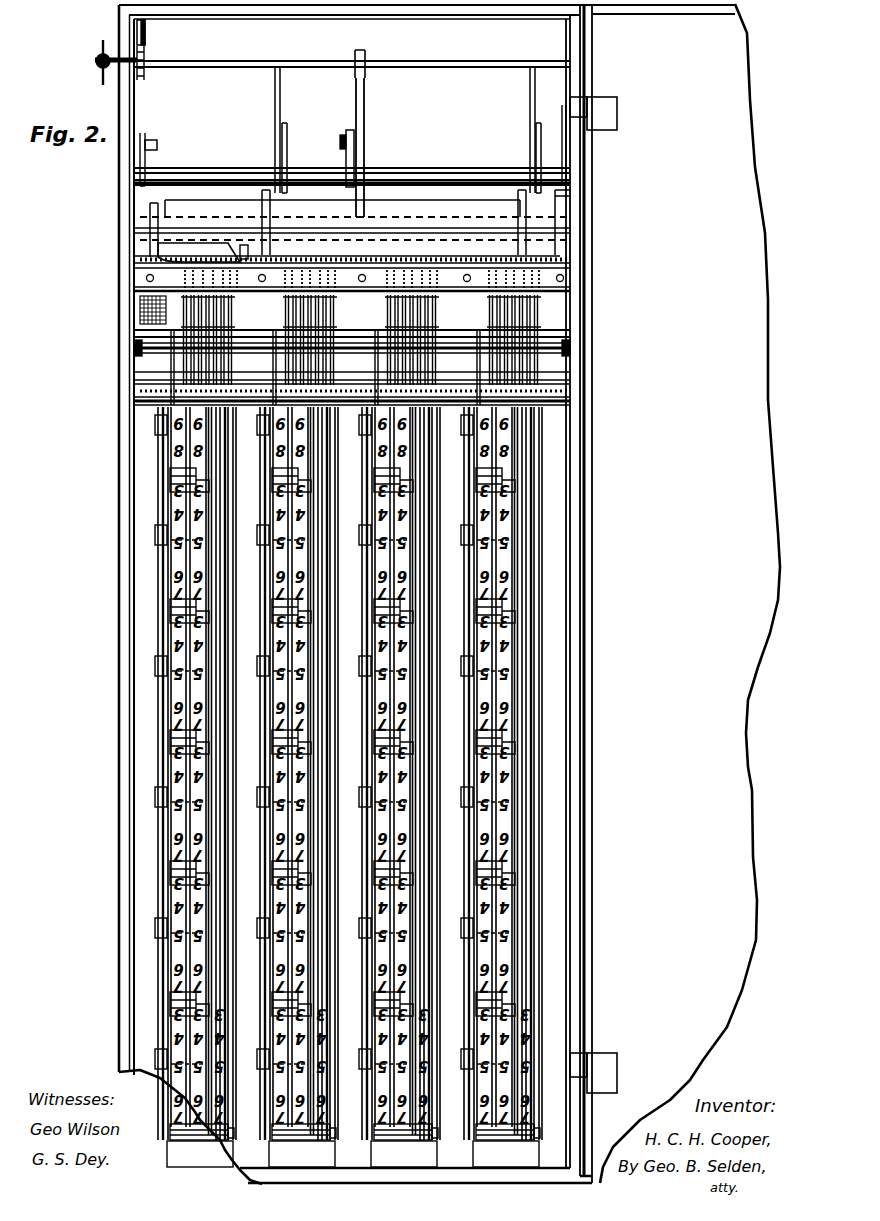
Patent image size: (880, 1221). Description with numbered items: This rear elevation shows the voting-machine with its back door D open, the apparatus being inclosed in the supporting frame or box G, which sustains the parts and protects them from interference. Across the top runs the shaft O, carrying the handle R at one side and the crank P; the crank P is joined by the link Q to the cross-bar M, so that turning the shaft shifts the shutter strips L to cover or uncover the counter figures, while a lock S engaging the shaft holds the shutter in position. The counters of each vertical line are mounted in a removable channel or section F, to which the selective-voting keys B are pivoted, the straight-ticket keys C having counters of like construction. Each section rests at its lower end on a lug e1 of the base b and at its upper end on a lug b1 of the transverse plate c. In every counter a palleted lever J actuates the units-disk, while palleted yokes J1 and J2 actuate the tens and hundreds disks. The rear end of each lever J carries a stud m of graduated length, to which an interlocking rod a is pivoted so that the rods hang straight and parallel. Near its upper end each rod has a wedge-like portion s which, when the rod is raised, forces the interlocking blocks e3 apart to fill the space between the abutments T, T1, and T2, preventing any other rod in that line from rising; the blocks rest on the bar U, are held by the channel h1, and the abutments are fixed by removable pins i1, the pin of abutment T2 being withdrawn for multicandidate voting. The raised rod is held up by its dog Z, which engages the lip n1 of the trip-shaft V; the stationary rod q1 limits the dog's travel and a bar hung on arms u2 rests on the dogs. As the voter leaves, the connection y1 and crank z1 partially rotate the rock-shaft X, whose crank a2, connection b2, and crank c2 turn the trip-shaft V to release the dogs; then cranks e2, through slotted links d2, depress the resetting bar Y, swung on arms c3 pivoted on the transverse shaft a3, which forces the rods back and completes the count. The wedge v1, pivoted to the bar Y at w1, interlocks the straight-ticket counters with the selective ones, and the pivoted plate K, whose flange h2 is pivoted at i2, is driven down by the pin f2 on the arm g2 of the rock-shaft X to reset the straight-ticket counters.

The supporting frame or box G is at (575, 40).
The door D is at (650, 550).
The shaft O is at (452, 61).
The lock S is at (145, 36).
The handle R is at (100, 62).
The arm g2 is at (145, 133).
The pin f2 is at (157, 145).
The slotted links d2 is at (280, 98).
The cranks e2 is at (287, 141).
The crank P is at (355, 76).
The connection or link Q is at (367, 147).
The connection y1 is at (346, 135).
The crank z1 is at (346, 157).
The rock-shaft X is at (470, 168).
The crank a2 is at (566, 152).
The connection b2 is at (565, 200).
The flange h2 is at (150, 210).
The pivoted plate K is at (170, 250).
The pivot i2 is at (150, 232).
The arms c3 is at (518, 215).
The cross-bar M is at (342, 211).
The transverse shaft a3 is at (600, 211).
The pivot w1 is at (253, 249).
The shutter strips L is at (545, 243).
The resetting bar Y is at (419, 250).
The abutment T is at (352, 279).
The abutment T1 is at (367, 278).
The abutment T2 is at (472, 278).
The channel h1 is at (146, 277).
The interlocking blocks e3 is at (362, 278).
The pins i1 is at (476, 302).
The wedge-like portions s is at (365, 350).
The transverse plate c is at (140, 302).
The lugs b1 is at (610, 332).
The wedge or interlocking rod v1 is at (256, 306).
The bar U is at (347, 307).
The arms u2 is at (600, 350).
The stationary rod q1 is at (140, 372).
The dog Z is at (347, 362).
The trip-shaft V is at (352, 392).
The lip n1 is at (135, 386).
The crank c2 is at (570, 384).
The straight-ticket keys C is at (164, 449).
The selective-voting keys B is at (266, 450).
The stud m is at (172, 483).
The interlocking rods a is at (346, 644).
The palleted lever J is at (273, 577).
The removable channel or section F is at (470, 520).
The palleted yoke J1 is at (385, 915).
The palleted yoke J2 is at (428, 915).
The lugs e1 is at (404, 1152).
The base b is at (455, 1172).